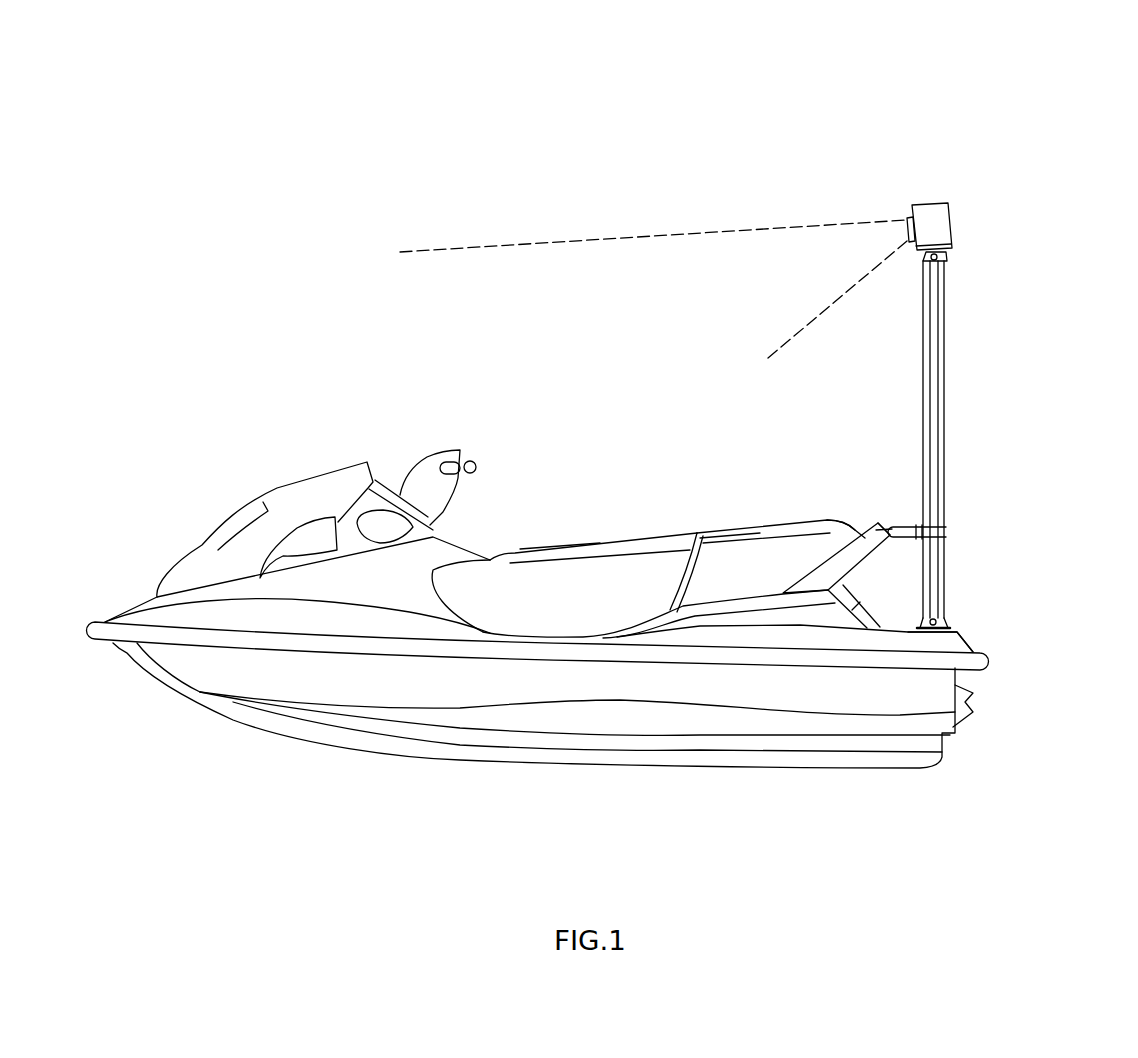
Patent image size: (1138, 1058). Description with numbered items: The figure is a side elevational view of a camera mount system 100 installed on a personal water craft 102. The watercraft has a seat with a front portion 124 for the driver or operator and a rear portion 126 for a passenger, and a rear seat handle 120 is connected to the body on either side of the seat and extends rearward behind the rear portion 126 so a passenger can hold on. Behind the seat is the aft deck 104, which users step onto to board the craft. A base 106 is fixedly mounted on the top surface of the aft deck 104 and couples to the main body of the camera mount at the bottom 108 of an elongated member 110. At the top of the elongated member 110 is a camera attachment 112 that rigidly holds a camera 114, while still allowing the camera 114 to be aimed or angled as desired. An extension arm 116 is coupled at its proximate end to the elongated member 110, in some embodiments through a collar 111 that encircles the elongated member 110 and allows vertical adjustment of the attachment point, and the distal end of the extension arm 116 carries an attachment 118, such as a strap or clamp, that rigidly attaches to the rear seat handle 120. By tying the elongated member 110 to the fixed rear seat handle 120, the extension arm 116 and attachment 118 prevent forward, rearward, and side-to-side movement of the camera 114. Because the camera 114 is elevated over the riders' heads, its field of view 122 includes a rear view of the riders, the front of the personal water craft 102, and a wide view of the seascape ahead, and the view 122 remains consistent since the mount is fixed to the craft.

The camera mount system 100 is at (1030, 54).
The personal water craft 102 is at (515, 487).
The aft deck 104 is at (970, 643).
The base 106 is at (950, 626).
The bottom of elongated member 108 is at (947, 617).
The elongated member 110 is at (945, 420).
The collar 111 is at (947, 527).
The camera attachment 112 is at (945, 260).
The camera 114 is at (950, 228).
The extension arm 116 is at (916, 527).
The attachment 118 is at (878, 523).
The rear seat handle 120 is at (842, 521).
The field of view 122 is at (632, 238).
The front portion of seat 124 is at (578, 552).
The rear portion of seat 126 is at (723, 527).